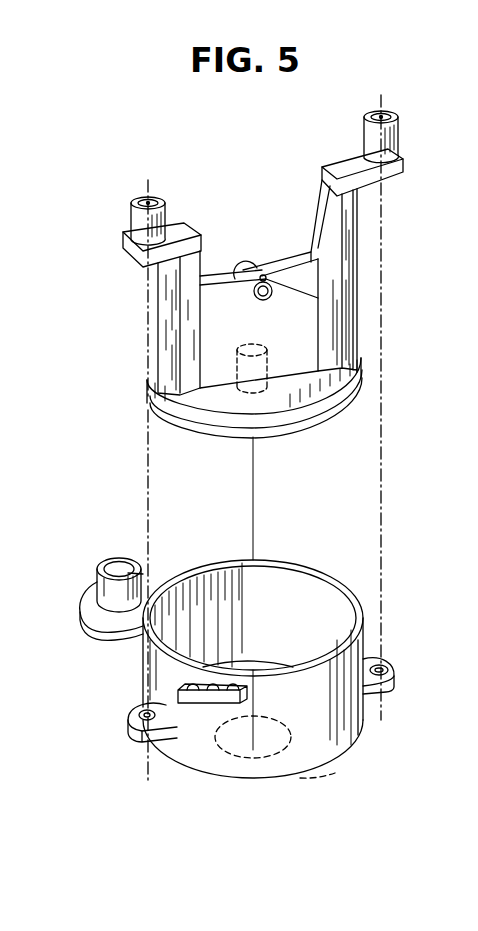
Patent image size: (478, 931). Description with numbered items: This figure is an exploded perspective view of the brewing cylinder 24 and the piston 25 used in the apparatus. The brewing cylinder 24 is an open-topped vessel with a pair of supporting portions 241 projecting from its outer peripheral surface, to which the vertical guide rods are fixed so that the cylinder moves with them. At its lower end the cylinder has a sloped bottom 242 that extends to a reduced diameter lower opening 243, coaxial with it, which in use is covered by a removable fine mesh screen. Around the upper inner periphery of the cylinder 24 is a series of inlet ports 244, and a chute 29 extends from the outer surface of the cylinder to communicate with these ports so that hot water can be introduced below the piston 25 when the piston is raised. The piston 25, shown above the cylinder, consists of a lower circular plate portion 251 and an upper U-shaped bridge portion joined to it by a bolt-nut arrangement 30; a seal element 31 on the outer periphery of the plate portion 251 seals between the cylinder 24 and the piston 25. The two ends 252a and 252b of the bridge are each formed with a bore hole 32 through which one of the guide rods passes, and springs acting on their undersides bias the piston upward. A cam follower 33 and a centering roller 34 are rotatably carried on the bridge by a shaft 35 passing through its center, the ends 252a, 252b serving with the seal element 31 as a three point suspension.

The brewing cylinder 24 is at (378, 643).
The supporting portions 241 is at (396, 676).
The sloped bottom 242 is at (335, 773).
The lower opening 243 is at (218, 750).
The inlet ports 244 is at (228, 556).
The piston 25 is at (160, 325).
The lower circular plate portion 251 is at (290, 422).
The end of bridge portion 252a is at (367, 138).
The end of bridge portion 252b is at (133, 214).
The chute 29 is at (120, 637).
The bolt-nut arrangement 30 is at (277, 393).
The seal element 31 is at (362, 384).
The bore hole 32 is at (155, 203).
The cam follower 33 is at (243, 262).
The centering roller 34 is at (265, 276).
The shaft 35 is at (263, 300).